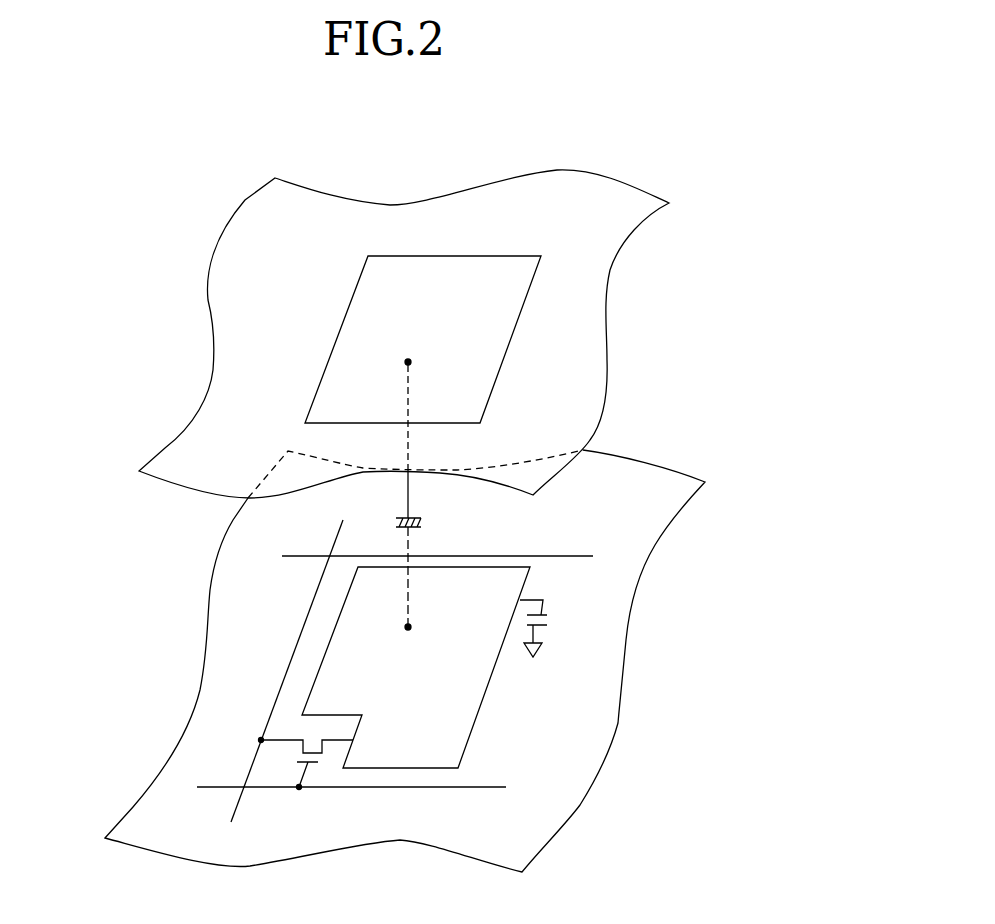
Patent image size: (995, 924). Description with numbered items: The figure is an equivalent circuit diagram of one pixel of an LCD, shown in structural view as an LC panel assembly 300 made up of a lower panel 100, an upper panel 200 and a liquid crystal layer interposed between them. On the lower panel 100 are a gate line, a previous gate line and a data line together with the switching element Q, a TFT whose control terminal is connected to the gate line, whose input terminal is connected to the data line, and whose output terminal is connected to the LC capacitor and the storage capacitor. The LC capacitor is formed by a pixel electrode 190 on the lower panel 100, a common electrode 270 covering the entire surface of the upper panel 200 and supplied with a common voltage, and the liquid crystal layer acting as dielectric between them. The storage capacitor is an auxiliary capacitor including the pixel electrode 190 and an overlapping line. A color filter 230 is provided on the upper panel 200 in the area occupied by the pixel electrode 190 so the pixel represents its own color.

The lower panel 100 is at (414, 661).
The pixel electrode 190 is at (482, 713).
The upper panel 200 is at (423, 334).
The color filter 230 is at (507, 353).
The common electrode 270 is at (605, 311).
The LC panel assembly 300 is at (135, 568).